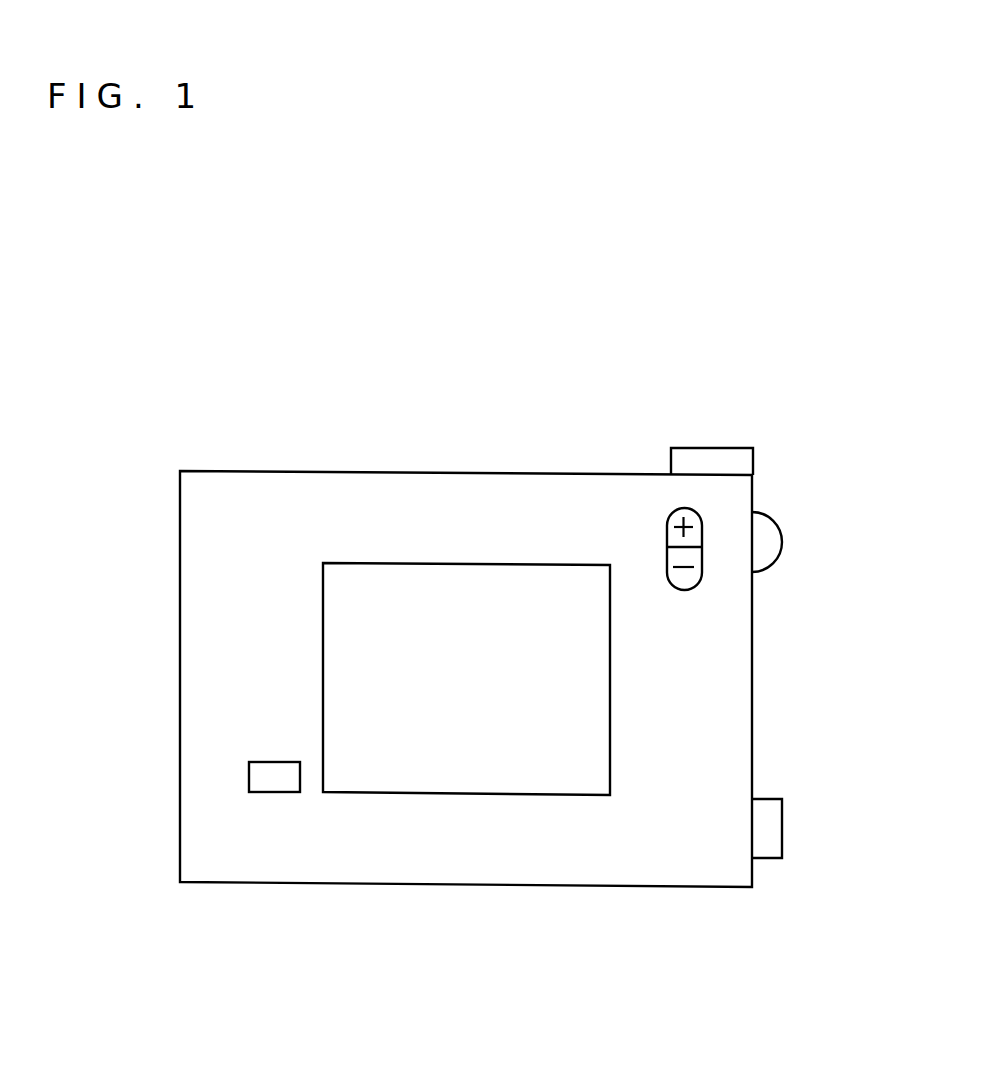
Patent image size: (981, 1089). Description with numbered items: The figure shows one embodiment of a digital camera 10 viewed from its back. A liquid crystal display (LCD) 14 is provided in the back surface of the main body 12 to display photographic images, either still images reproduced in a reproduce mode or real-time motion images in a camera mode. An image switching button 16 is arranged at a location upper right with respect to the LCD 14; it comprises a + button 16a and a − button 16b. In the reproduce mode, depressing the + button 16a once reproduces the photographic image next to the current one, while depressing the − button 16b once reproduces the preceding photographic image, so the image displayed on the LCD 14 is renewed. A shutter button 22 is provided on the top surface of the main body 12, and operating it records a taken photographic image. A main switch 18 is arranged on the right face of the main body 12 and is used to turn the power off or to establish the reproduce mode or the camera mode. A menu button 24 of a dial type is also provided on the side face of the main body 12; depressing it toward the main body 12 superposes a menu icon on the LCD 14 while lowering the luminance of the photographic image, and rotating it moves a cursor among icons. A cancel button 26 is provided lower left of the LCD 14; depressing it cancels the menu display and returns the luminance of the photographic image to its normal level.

The digital camera 10 is at (290, 334).
The main body 12 is at (358, 473).
The liquid crystal display (LCD) 14 is at (432, 794).
The image switching button 16 is at (653, 547).
The + button 16a is at (702, 525).
The − button 16b is at (702, 565).
The main switch 18 is at (783, 798).
The shutter button 22 is at (688, 448).
The menu button 24 is at (782, 540).
The cancel button 26 is at (260, 760).